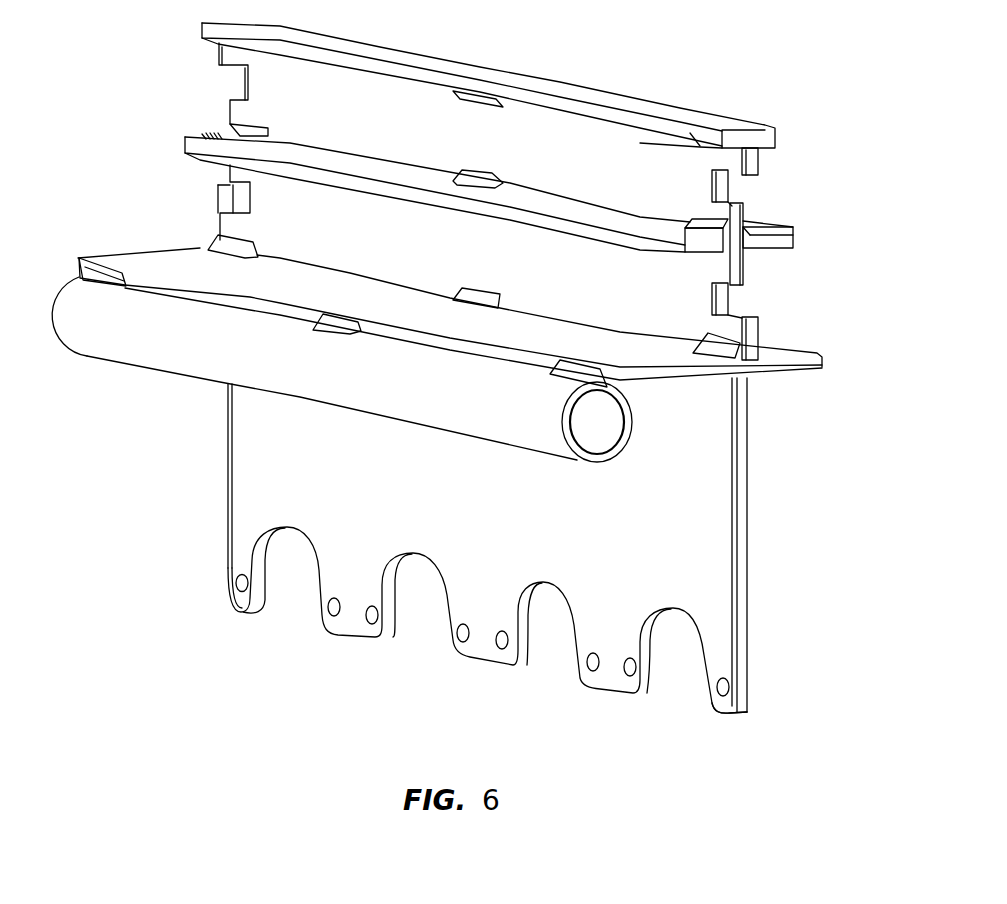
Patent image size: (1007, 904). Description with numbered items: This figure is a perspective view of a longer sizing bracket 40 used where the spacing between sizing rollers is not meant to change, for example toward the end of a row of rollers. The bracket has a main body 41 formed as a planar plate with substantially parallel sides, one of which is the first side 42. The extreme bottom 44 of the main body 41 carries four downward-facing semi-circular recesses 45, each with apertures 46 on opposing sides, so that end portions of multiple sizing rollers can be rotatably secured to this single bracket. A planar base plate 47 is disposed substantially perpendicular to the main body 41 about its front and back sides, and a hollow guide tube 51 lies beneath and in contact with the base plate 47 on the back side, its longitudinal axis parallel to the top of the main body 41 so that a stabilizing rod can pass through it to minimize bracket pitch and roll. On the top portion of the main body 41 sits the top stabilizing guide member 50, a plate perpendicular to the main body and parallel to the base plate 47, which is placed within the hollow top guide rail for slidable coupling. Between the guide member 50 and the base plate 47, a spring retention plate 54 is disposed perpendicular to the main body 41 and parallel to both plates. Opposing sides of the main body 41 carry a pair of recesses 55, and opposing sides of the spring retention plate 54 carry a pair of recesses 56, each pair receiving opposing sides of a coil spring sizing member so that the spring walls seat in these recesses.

The sizing bracket 40 is at (487, 551).
The main body 41 is at (228, 456).
The first side 42 is at (738, 562).
The bottom 44 is at (720, 647).
The semi-circular recess 45 is at (292, 545).
The apertures 46 is at (230, 588).
The planar base plate 47 is at (140, 258).
The top stabilizing guide member 50 is at (510, 80).
The hollow guide tube 51 is at (95, 342).
The spring retention plate 54 is at (398, 173).
The recesses 55 is at (242, 85).
The recesses 56 is at (197, 135).